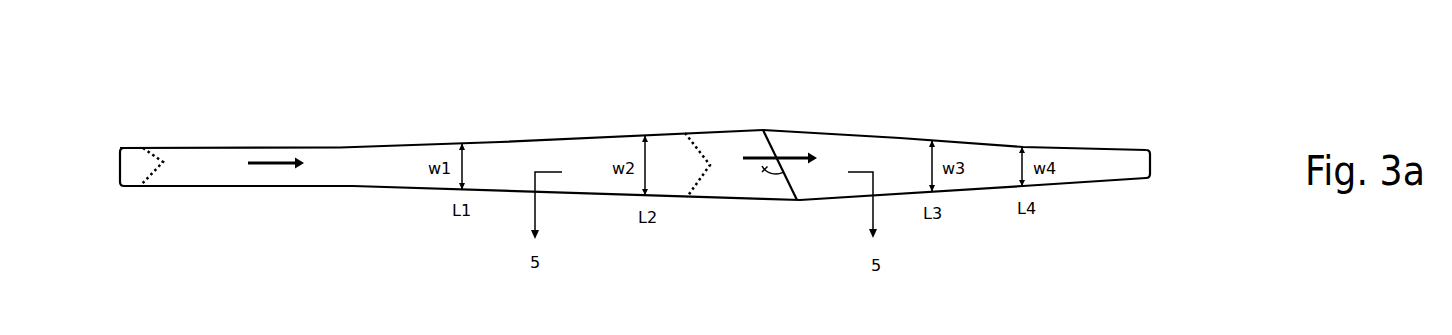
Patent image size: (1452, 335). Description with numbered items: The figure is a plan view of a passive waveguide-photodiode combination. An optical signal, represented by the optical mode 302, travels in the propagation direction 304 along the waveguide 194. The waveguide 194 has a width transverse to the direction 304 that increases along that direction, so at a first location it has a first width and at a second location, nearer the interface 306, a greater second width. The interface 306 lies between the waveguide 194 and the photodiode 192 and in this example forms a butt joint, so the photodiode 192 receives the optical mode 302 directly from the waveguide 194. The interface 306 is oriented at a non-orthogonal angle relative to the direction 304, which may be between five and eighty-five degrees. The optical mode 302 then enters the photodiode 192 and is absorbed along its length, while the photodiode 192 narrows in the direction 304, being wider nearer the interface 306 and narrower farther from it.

The photodiode 192 is at (910, 135).
The waveguide 194 is at (490, 142).
The optical mode 302 is at (161, 158).
The propagation direction 304 is at (277, 167).
The interface 306 is at (788, 188).